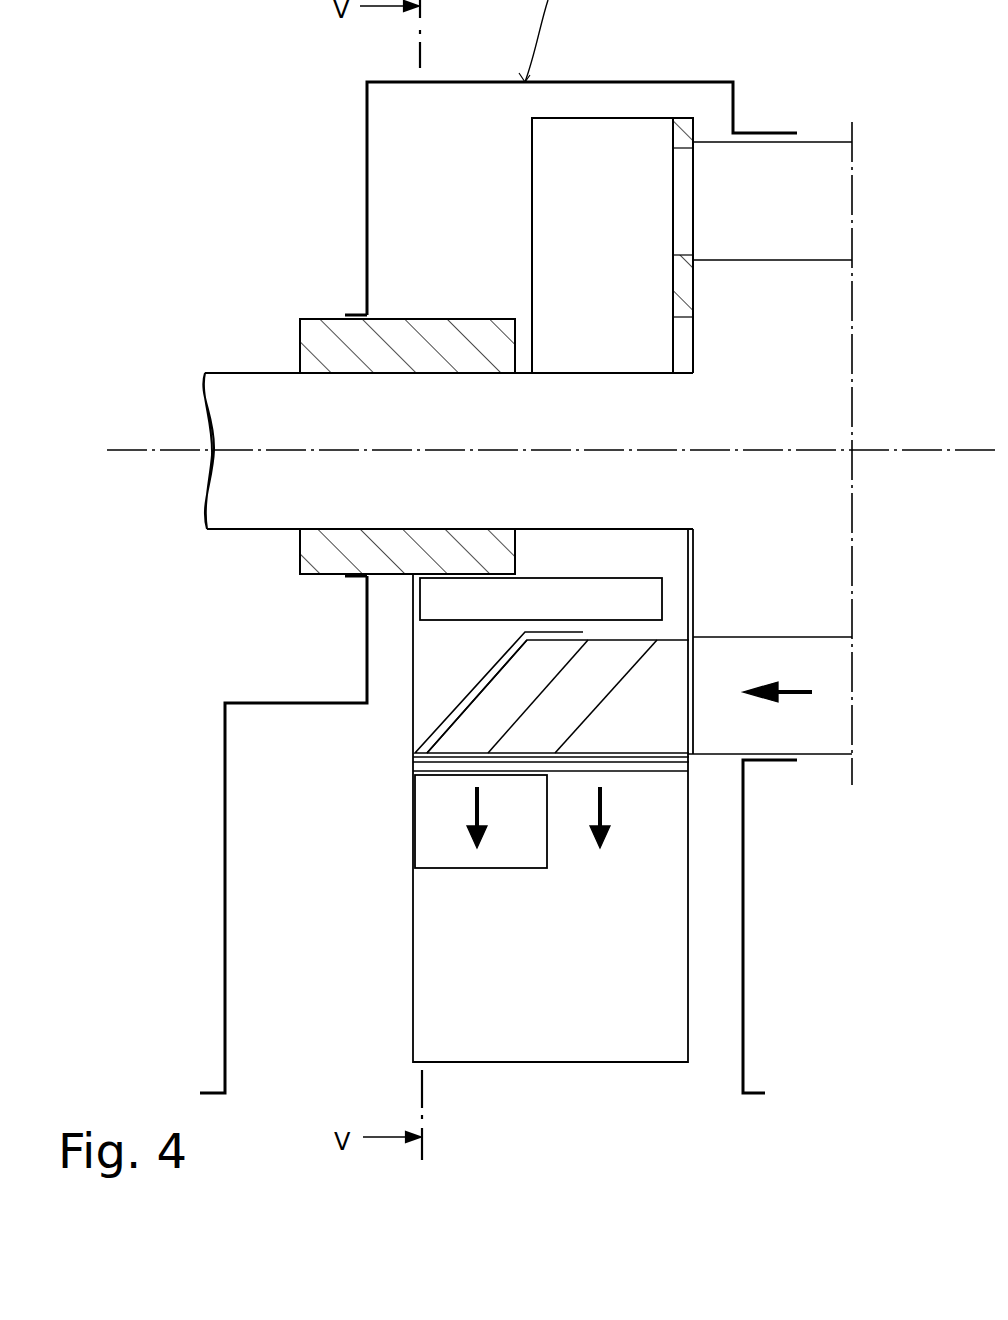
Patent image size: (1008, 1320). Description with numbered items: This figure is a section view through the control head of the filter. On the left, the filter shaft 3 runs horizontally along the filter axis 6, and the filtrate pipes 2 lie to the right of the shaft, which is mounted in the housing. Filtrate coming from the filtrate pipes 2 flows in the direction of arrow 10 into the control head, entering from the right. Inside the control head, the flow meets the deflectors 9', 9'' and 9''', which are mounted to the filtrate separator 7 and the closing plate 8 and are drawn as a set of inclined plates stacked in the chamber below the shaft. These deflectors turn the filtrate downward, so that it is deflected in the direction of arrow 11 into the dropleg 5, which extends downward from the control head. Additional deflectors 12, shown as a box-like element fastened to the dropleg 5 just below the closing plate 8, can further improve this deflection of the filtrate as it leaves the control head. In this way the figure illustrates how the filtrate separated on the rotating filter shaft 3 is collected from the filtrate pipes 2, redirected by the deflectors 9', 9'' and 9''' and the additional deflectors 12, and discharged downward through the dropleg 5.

The filtrate pipes 2 is at (792, 180).
The filter shaft 3 is at (805, 327).
The dropleg 5 is at (225, 917).
The filter axis 6 is at (126, 439).
The filtrate separator 7 is at (670, 738).
The closing plate 8 is at (643, 764).
The deflector 9' is at (477, 696).
The deflector 9'' is at (538, 696).
The deflector 9''' is at (606, 696).
The arrow 10 is at (797, 683).
The arrow 11 is at (480, 805).
The additional deflectors 12 is at (512, 862).